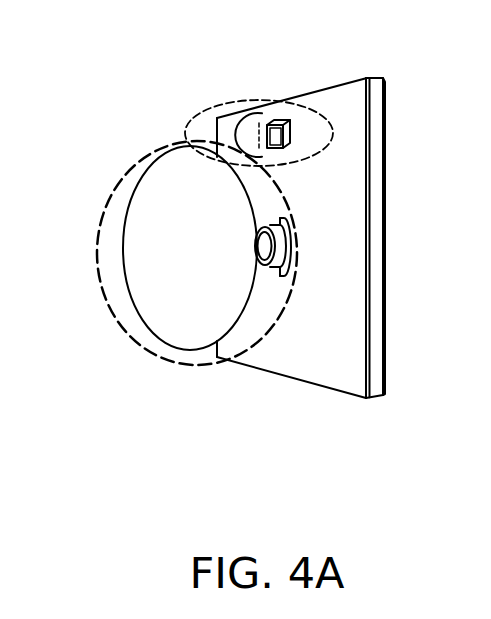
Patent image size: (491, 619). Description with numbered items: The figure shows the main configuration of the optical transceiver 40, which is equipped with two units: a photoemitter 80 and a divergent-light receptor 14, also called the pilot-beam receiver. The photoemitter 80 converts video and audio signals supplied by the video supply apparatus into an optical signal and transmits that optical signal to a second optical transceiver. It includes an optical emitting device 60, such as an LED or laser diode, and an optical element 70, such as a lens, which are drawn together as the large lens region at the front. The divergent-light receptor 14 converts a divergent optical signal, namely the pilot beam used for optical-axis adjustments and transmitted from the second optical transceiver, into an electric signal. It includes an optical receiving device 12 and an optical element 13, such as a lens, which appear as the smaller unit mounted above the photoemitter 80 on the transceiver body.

The optical receiving device 12 is at (277, 121).
The optical element 13 is at (338, 82).
The divergent-light receptor 14 is at (333, 135).
The optical transceiver 40 is at (332, 420).
The optical emitting device 60 is at (268, 278).
The optical element 70 is at (145, 328).
The photoemitter 80 is at (96, 259).